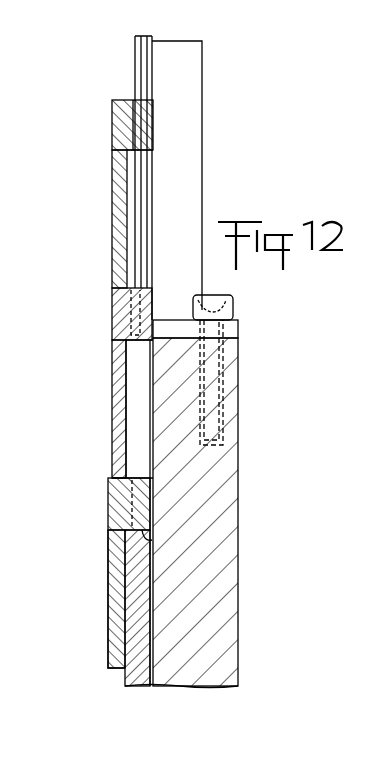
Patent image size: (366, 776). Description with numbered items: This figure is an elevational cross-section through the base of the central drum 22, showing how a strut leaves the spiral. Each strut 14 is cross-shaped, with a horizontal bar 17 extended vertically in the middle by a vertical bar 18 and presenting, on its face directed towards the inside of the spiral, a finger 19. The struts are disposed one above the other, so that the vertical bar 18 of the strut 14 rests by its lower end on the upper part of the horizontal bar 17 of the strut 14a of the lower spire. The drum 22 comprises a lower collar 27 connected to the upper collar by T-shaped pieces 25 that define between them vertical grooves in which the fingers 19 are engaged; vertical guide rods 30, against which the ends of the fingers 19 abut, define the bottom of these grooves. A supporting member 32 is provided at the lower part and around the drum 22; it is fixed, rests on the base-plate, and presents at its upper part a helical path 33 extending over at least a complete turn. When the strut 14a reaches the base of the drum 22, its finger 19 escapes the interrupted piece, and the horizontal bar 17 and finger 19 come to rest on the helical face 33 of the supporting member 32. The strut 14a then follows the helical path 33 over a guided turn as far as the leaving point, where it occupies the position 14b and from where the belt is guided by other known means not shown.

The central drum 22 is at (208, 148).
The T-shaped piece 25 is at (138, 63).
The vertical guide rod 30 is at (190, 217).
The strut 14 is at (117, 190).
The strut of the lower spire 14a is at (118, 388).
The strut position at leaving point 14b is at (112, 597).
The horizontal bar 17 is at (113, 525).
The vertical bar 18 is at (117, 448).
The finger 19 is at (131, 300).
The lower collar 27 is at (210, 604).
The supporting member 32 is at (137, 640).
The helical path 33 is at (153, 541).